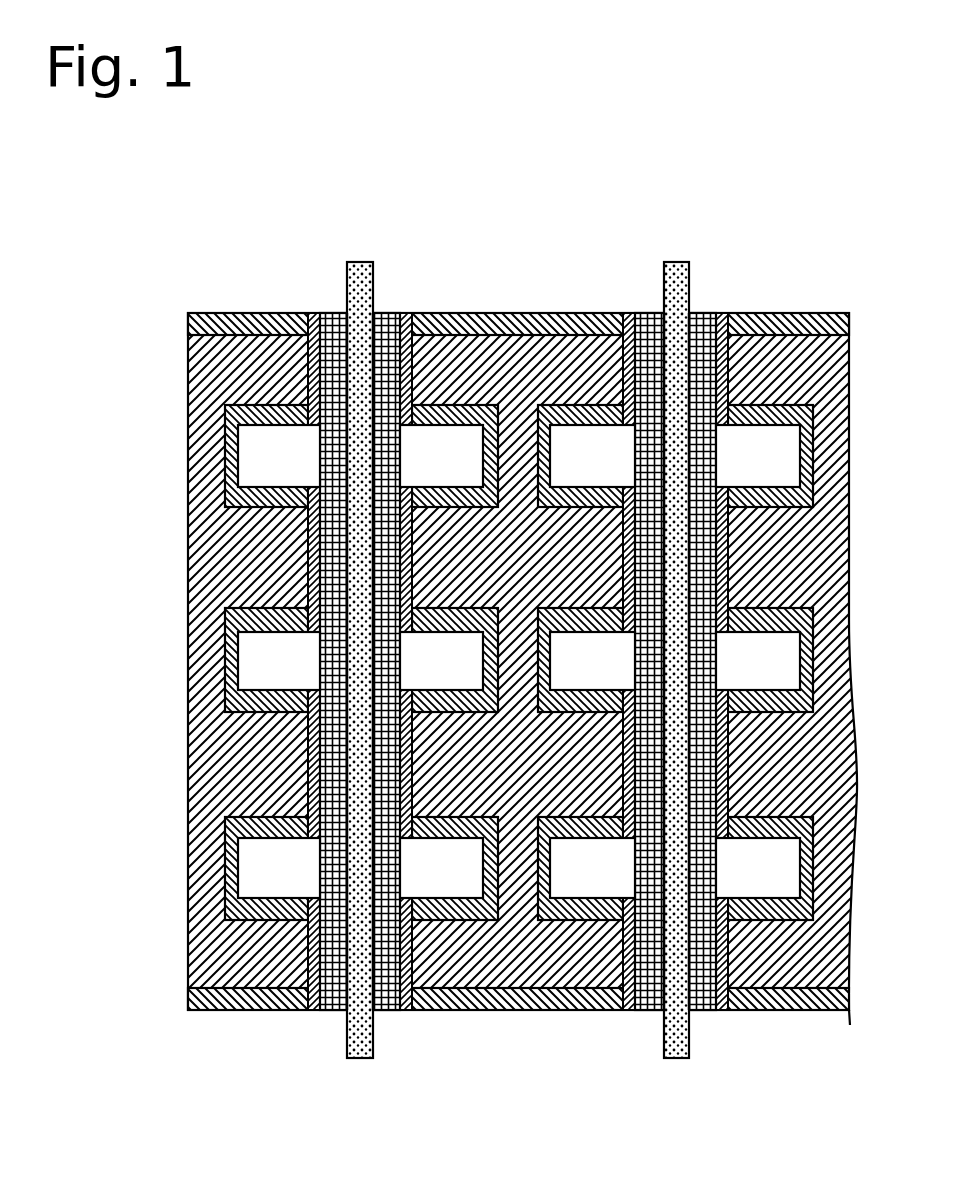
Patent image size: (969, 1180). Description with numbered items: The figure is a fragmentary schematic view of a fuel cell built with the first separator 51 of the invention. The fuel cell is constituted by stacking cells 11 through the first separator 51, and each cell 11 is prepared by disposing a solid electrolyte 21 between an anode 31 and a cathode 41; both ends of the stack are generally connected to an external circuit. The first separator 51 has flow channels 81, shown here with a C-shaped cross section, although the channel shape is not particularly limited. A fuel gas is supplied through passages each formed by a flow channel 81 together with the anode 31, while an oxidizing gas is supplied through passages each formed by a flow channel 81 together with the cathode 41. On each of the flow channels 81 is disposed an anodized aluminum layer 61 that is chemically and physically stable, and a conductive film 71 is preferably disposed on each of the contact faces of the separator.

The cell 11 is at (488, 648).
The solid electrolyte 21 is at (355, 262).
The anode 31 is at (385, 312).
The cathode 41 is at (342, 313).
The first separator 51 is at (247, 370).
The anodized aluminum layer 61 is at (510, 400).
The conductive film 71 is at (622, 367).
The flow channel 81 is at (519, 661).